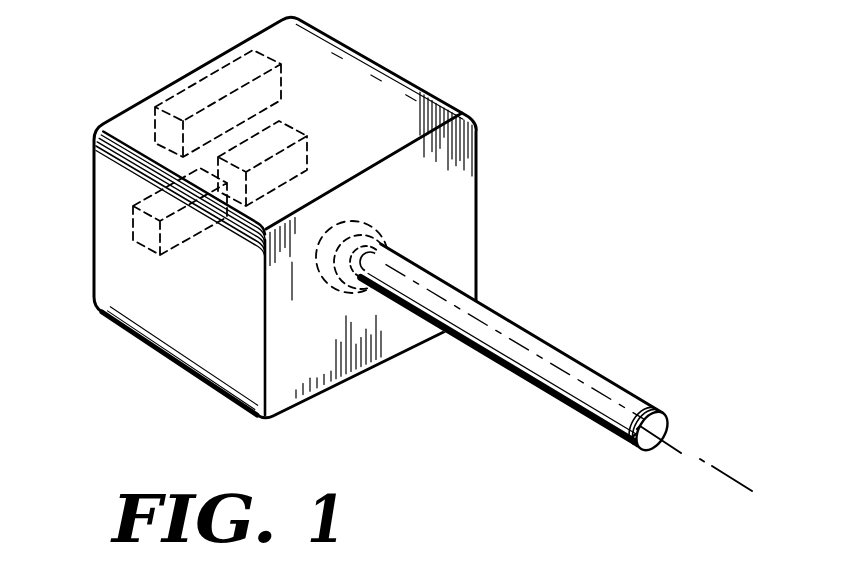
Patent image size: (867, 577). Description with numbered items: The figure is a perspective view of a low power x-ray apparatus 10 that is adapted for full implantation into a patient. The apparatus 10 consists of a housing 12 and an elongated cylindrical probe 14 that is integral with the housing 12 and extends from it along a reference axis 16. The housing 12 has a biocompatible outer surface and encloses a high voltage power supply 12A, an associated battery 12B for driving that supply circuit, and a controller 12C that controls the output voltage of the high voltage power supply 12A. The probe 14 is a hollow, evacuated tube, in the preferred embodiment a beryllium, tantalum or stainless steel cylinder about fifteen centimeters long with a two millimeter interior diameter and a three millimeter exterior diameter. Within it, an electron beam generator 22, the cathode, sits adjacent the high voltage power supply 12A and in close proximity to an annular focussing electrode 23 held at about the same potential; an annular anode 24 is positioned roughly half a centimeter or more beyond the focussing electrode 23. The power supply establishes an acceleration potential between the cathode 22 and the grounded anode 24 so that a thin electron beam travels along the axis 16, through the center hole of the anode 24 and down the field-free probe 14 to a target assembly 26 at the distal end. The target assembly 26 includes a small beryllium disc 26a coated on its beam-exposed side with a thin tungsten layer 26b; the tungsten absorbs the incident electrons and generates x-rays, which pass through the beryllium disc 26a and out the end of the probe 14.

The x-ray apparatus 10 is at (562, 142).
The housing 12 is at (372, 62).
The high voltage power supply 12A is at (278, 61).
The battery 12B is at (297, 139).
The controller 12C is at (134, 232).
The probe 14 is at (486, 357).
The reference axis 16 is at (731, 470).
The electron beam generator 22 is at (320, 290).
The annular focussing electrode 23 is at (370, 232).
The annular anode 24 is at (386, 247).
The target assembly 26 is at (665, 392).
The beryllium disc 26a is at (636, 442).
The tungsten layer 26b is at (607, 428).